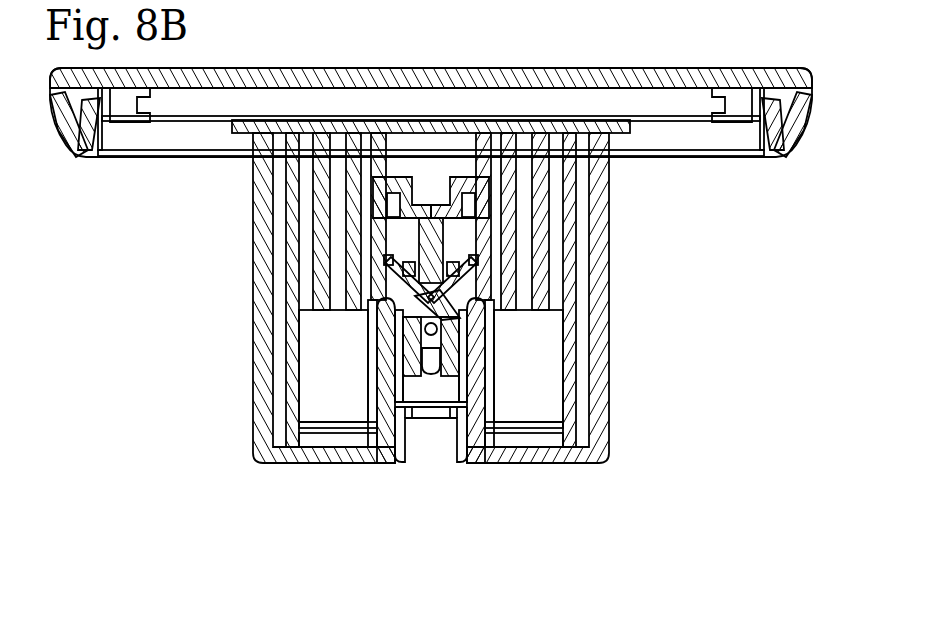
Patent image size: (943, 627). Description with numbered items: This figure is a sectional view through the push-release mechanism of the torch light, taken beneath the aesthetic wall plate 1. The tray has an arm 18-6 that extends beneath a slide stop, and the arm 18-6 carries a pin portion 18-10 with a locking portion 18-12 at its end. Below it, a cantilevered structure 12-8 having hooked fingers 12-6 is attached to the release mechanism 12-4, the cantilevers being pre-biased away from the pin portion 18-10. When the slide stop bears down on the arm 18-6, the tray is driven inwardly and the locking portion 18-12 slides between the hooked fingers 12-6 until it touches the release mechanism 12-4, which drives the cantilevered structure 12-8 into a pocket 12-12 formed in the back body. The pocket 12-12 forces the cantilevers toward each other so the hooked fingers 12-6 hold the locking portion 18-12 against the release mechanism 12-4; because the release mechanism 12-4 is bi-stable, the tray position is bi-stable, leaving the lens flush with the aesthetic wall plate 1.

The aesthetic wall plate 1 is at (628, 68).
The arm 18-6 is at (458, 178).
The pin portion 18-10 is at (433, 240).
The locking portion 18-12 is at (413, 277).
The hooked fingers 12-6 is at (472, 268).
The cantilevered structure 12-8 is at (448, 298).
The pocket 12-12 is at (383, 326).
The release mechanism 12-4 is at (430, 312).